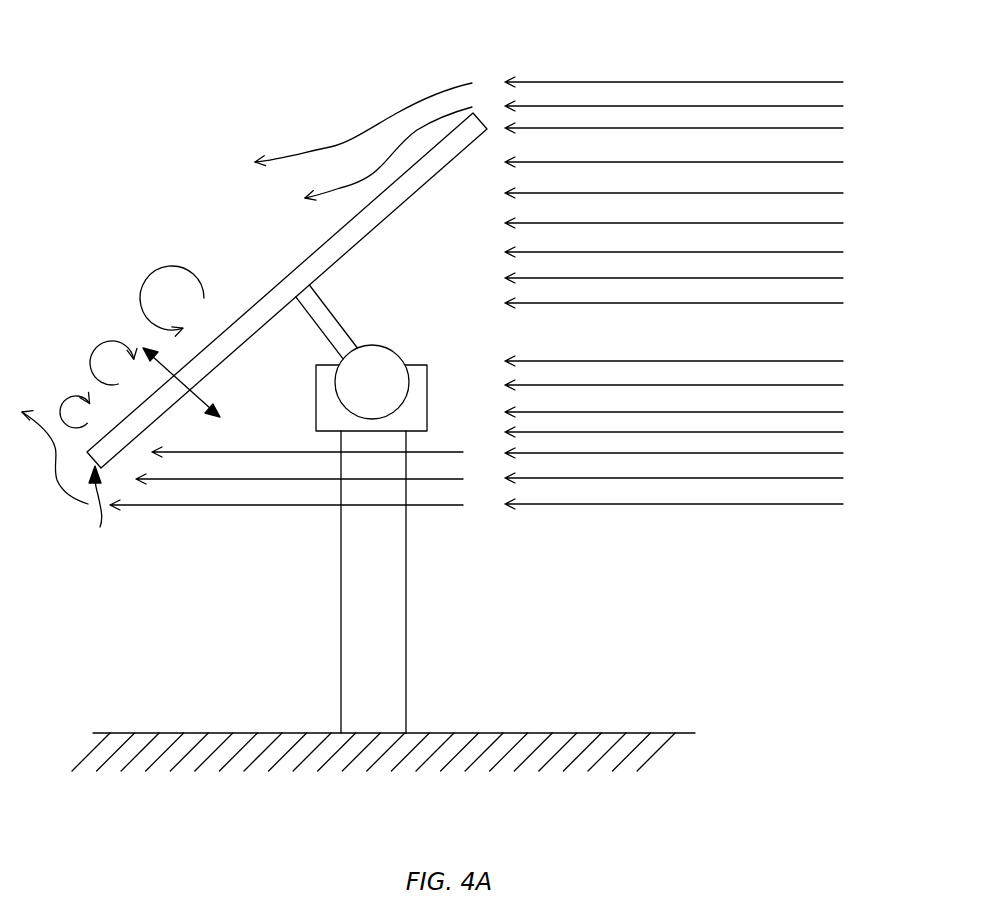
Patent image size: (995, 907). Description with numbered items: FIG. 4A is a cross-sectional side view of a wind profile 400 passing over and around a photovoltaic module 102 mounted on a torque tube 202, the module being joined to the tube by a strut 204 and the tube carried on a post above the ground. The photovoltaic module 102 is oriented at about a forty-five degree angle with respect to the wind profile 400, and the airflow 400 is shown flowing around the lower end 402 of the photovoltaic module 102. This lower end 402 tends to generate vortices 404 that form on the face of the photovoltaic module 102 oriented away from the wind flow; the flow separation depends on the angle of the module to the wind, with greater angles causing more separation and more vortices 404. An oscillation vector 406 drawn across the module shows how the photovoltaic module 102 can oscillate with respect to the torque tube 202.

The photovoltaic module 102 is at (288, 273).
The torque tube 202 is at (372, 382).
The support strut 204 is at (323, 303).
The wind profile 400 is at (549, 272).
The lower end 402 is at (69, 483).
The vortices 404 is at (126, 335).
The oscillation vector 406 is at (194, 382).